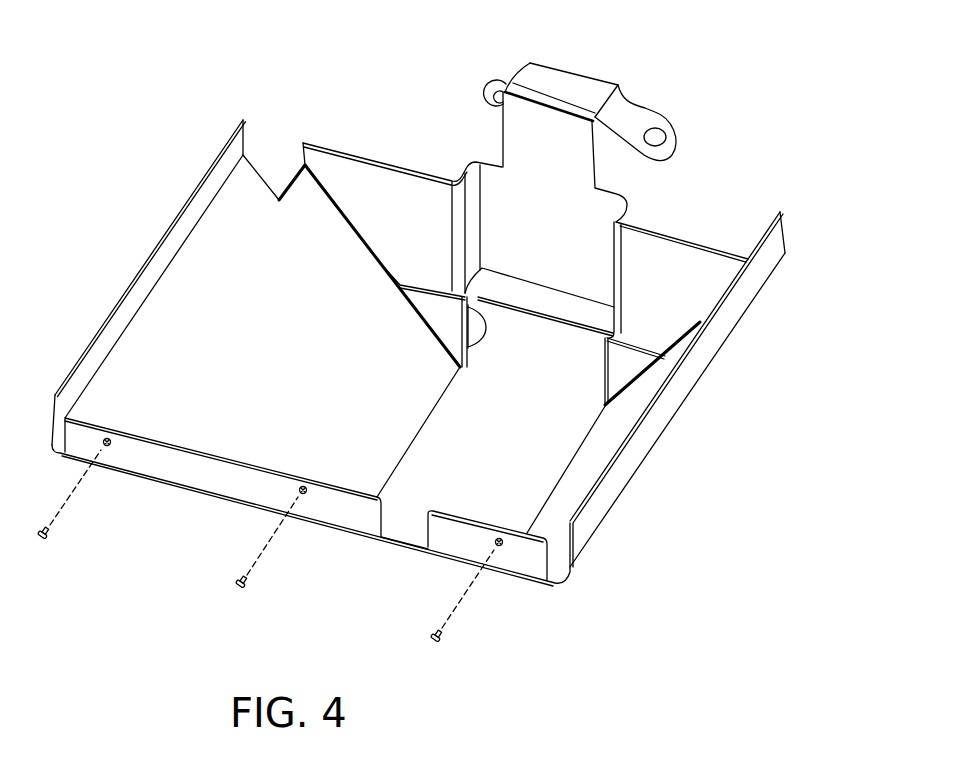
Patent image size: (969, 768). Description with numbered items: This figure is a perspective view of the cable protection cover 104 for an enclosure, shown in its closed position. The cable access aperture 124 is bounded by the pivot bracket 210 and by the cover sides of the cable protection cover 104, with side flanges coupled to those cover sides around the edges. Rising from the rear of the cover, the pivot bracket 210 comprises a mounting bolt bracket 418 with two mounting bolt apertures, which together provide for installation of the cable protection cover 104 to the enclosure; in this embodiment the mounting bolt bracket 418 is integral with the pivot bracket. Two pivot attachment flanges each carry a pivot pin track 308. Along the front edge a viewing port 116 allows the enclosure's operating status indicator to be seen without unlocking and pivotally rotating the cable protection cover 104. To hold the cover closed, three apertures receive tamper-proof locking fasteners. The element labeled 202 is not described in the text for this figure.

The cable protection cover 104 is at (806, 136).
The viewing port 116 is at (438, 567).
The cable access aperture 124 is at (517, 452).
The cross bar 202 is at (522, 313).
The pivot bracket 210 is at (418, 152).
The pivot pin track 308 is at (466, 368).
The mounting bolt bracket 418 is at (603, 80).